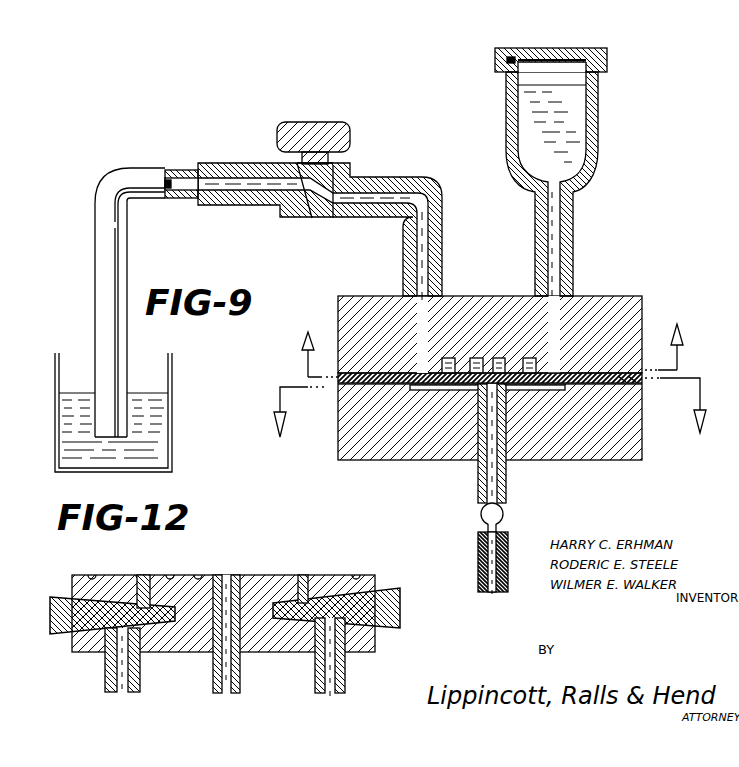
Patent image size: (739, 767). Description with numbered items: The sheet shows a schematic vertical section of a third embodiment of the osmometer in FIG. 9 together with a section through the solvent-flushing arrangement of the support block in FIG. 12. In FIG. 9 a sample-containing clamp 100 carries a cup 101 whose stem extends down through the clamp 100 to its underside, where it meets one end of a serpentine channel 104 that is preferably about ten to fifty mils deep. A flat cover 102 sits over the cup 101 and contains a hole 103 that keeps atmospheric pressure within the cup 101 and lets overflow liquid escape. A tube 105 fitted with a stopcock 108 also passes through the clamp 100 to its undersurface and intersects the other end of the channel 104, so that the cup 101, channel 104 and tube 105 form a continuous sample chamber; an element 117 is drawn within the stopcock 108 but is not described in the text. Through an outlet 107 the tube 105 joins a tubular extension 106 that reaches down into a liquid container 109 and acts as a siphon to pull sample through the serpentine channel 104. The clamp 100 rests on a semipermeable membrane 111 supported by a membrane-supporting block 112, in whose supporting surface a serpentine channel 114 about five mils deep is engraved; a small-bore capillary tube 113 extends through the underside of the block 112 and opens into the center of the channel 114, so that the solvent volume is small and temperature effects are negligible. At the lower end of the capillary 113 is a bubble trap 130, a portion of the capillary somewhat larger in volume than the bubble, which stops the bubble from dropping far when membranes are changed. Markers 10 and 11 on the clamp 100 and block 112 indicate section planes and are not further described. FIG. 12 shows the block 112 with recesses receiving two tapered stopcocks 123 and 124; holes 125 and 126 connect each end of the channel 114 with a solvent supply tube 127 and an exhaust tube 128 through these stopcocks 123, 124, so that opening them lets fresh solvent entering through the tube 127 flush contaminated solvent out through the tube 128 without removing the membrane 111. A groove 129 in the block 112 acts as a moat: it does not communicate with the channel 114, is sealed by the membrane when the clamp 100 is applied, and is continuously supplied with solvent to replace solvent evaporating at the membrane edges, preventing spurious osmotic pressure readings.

In FIG. 9, the clamp 100 is at (643, 312).
In FIG. 9, the cup 101 is at (510, 57).
In FIG. 9, the flat cover 102 is at (592, 50).
In FIG. 9, the hole 103 is at (545, 50).
In FIG. 9, the serpentine channel 104 is at (474, 358).
In FIG. 9, the tube 105 is at (350, 219).
In FIG. 9, the tubular extension 106 is at (100, 218).
In FIG. 9, the outlet 107 is at (190, 170).
In FIG. 9, the stopcock 108 is at (338, 94).
In FIG. 9, the liquid container 109 is at (171, 428).
In FIG. 9, the semipermeable membrane 111 is at (633, 385).
In FIG. 9, the membrane-supporting block 112 is at (585, 457).
In FIG. 12, the membrane-supporting block 112 is at (372, 576).
In FIG. 9, the capillary tube 113 is at (478, 486).
In FIG. 12, the capillary tube 113 is at (213, 681).
In FIG. 9, the serpentine channel 114 is at (440, 391).
In FIG. 12, the serpentine channel 114 is at (198, 576).
In FIG. 9, the valve plug 117 is at (310, 219).
In FIG. 9, the bubble trap 130 is at (480, 523).
In FIG. 9, the section line 10 is at (500, 344).
In FIG. 9, the section line 11 is at (500, 416).
In FIG. 12, the tapered stopcock 123 is at (60, 632).
In FIG. 12, the tapered stopcock 124 is at (396, 590).
In FIG. 12, the hole 125 is at (141, 576).
In FIG. 12, the hole 126 is at (322, 557).
In FIG. 12, the solvent supply tube 127 is at (112, 681).
In FIG. 12, the exhaust tube 128 is at (316, 679).
In FIG. 12, the groove 129 is at (92, 575).